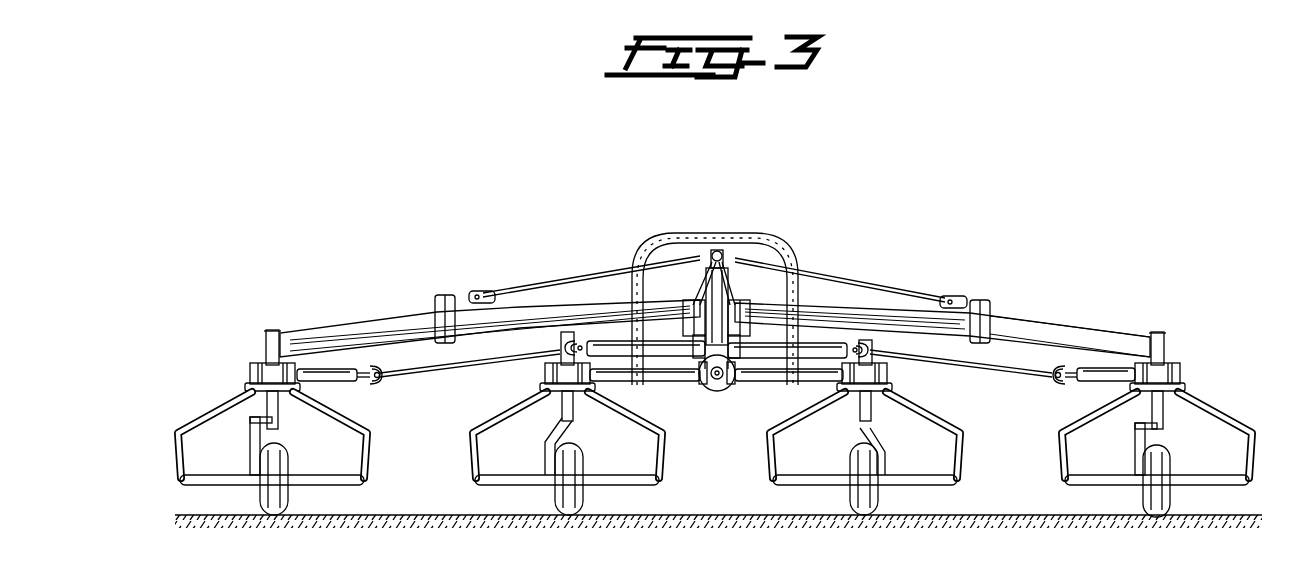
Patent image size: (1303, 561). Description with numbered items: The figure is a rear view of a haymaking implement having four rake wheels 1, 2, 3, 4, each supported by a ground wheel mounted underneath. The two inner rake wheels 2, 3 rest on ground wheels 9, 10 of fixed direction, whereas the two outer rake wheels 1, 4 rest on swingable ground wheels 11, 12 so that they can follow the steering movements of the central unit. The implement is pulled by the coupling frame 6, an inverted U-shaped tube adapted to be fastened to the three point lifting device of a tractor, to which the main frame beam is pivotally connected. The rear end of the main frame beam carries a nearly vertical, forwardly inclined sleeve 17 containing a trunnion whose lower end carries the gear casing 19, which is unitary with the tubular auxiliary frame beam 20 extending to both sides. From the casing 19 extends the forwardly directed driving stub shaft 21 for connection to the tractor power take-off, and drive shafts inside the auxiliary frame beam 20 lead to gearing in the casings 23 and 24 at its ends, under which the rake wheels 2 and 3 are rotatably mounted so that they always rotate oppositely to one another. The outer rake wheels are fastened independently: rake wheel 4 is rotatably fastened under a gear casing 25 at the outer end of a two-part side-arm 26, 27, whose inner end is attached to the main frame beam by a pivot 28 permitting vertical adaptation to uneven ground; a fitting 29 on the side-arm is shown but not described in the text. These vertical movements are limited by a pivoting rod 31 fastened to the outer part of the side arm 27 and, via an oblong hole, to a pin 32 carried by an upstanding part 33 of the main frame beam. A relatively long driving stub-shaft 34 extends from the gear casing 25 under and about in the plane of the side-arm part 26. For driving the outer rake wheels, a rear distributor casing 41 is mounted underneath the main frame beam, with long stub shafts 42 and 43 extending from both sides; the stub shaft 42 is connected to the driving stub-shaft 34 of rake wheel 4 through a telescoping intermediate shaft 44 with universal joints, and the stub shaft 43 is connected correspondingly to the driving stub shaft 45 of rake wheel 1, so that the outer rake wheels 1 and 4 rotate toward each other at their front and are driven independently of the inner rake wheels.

The rake wheel 1 is at (368, 448).
The rake wheel 2 is at (666, 448).
The rake wheel 3 is at (960, 455).
The rake wheel 4 is at (1255, 459).
The coupling frame 6 is at (678, 236).
The ground wheel 9 is at (581, 458).
The ground wheel 10 is at (851, 463).
The swingable ground wheel 11 is at (286, 455).
The swingable ground wheel 12 is at (1168, 465).
The sleeve 17 is at (711, 316).
The gear casing 19 is at (729, 386).
The auxiliary frame beam 20 is at (643, 382).
The driving stub shaft 21 is at (708, 387).
The gear casing 23 is at (889, 378).
The gear casing 24 is at (545, 377).
The gear casing 25 is at (1162, 378).
The side-arm part 26 is at (1068, 330).
The side-arm part 27 is at (831, 318).
The pivot 28 is at (739, 326).
The clamp 29 is at (981, 300).
The pivoting rod 31 is at (858, 283).
The pin 32 is at (712, 250).
The upstanding part 33 is at (726, 252).
The driving stub-shaft 34 is at (1073, 384).
The rear distributor casing 41 is at (693, 360).
The stub shaft 42 is at (852, 346).
The stub shaft 43 is at (592, 338).
The intermediate shaft 44 is at (965, 366).
The driving stub shaft 45 is at (363, 381).